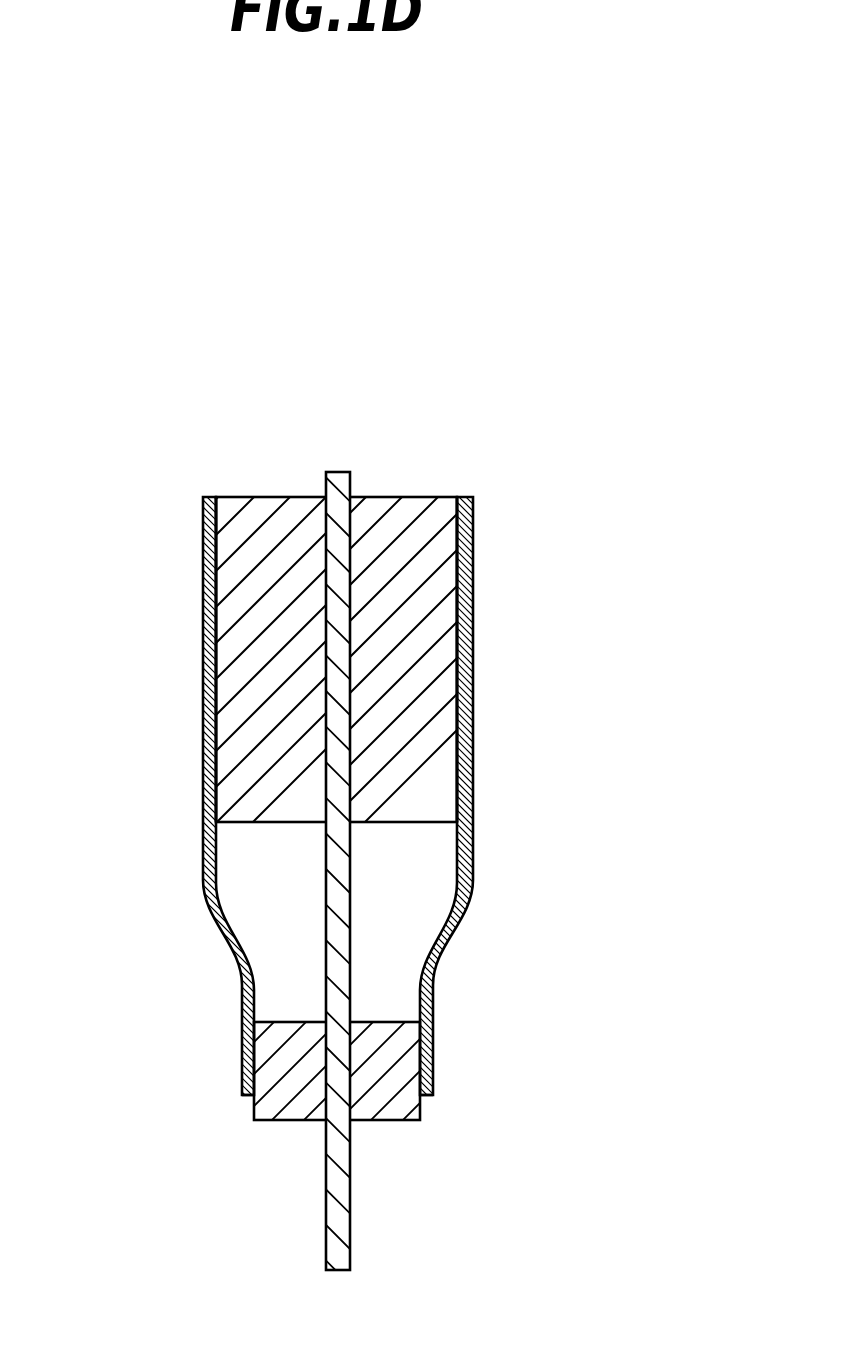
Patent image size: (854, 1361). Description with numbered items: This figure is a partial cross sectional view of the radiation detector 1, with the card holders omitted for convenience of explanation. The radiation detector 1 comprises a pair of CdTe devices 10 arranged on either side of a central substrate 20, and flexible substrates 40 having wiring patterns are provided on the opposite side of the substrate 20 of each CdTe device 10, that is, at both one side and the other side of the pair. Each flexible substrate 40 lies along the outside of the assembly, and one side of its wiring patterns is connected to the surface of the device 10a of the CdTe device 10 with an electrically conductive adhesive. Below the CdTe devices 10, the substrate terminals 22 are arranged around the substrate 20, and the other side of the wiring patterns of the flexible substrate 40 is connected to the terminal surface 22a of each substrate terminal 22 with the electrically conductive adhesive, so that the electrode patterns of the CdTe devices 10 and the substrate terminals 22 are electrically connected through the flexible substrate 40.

The radiation detector 1 is at (545, 465).
The CdTe device 10 is at (273, 497).
The surface of device 10a is at (207, 689).
The substrate 20 is at (340, 473).
The substrate terminal 22 is at (278, 1118).
The terminal surface 22a is at (242, 1062).
The flexible substrate 40 is at (203, 570).